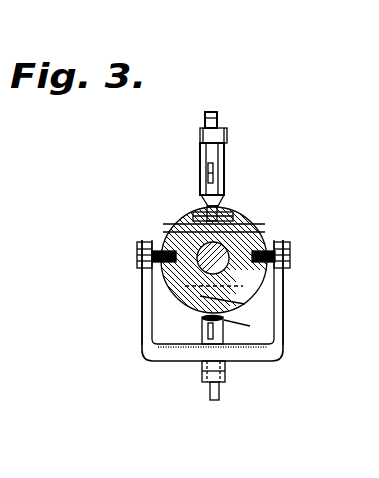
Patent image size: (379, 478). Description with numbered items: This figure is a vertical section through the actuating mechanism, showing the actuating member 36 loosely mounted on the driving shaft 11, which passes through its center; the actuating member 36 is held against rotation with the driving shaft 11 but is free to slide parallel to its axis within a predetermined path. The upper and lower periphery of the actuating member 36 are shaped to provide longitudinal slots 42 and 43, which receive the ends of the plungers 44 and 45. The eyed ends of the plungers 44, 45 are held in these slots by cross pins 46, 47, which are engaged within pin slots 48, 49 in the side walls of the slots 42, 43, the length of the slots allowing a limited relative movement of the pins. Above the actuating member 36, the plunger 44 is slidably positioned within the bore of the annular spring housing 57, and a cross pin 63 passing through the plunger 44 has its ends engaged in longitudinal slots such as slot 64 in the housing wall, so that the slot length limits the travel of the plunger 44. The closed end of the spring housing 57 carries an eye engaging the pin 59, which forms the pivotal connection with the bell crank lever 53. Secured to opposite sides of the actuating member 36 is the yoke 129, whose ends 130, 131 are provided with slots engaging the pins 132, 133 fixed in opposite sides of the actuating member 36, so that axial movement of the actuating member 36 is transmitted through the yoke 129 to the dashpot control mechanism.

The driving shaft 11 is at (176, 250).
The actuating member 36 is at (278, 233).
The longitudinal slot 42 is at (262, 233).
The longitudinal slot 43 is at (222, 300).
The plunger 44 is at (226, 199).
The plunger 45 is at (203, 316).
The cross pin 46 is at (200, 214).
The cross pin 47 is at (200, 296).
The pin slot 48 is at (222, 216).
The pin slot 49 is at (226, 320).
The bell crank lever 53 is at (217, 116).
The annular spring housing 57 is at (225, 160).
The pin 59 is at (200, 136).
The cross pin 63 is at (208, 166).
The longitudinal slot 64 is at (208, 180).
The yoke 129 is at (251, 359).
The yoke end 130 is at (283, 290).
The yoke end 131 is at (143, 279).
The pin 132 is at (290, 265).
The pin 133 is at (137, 256).